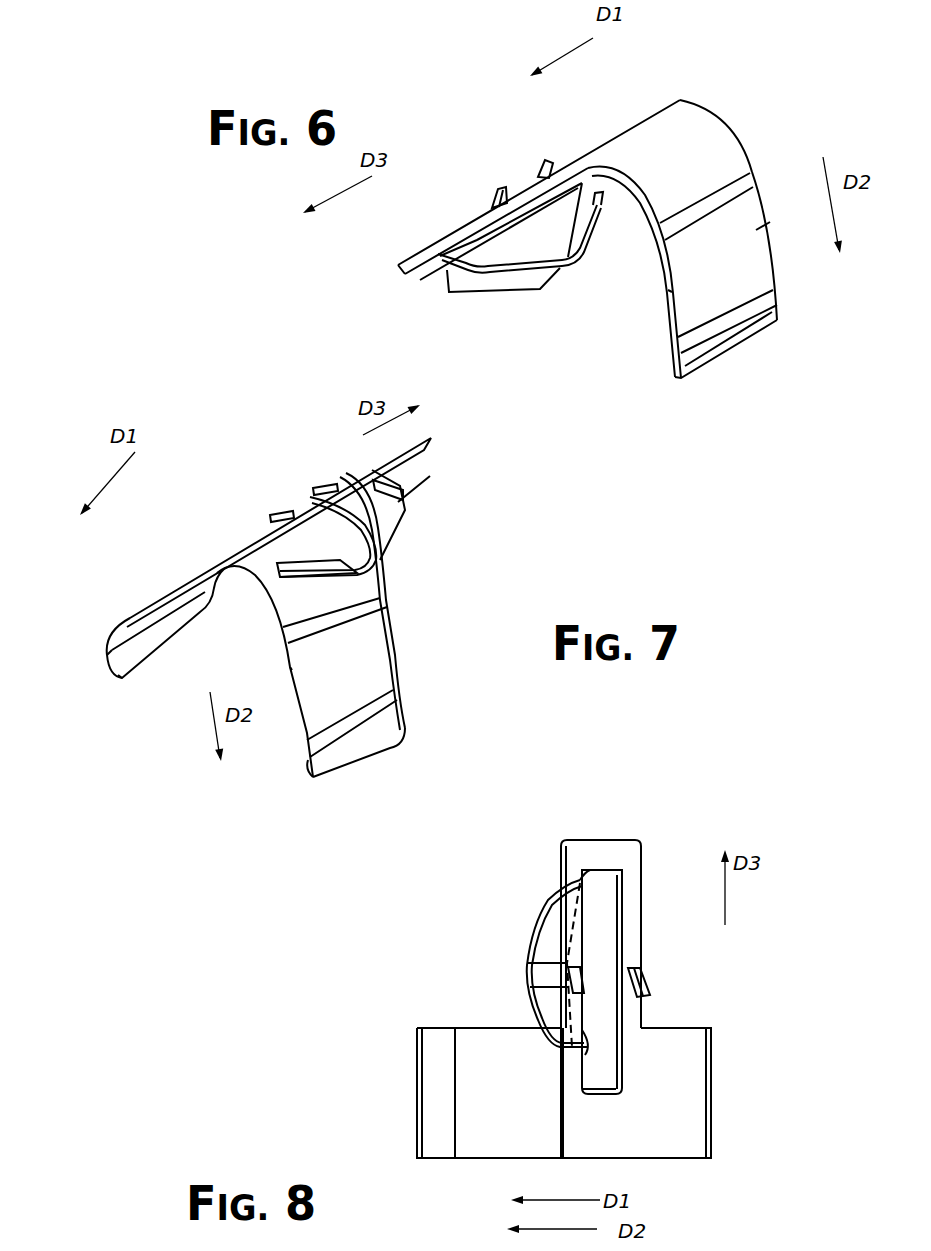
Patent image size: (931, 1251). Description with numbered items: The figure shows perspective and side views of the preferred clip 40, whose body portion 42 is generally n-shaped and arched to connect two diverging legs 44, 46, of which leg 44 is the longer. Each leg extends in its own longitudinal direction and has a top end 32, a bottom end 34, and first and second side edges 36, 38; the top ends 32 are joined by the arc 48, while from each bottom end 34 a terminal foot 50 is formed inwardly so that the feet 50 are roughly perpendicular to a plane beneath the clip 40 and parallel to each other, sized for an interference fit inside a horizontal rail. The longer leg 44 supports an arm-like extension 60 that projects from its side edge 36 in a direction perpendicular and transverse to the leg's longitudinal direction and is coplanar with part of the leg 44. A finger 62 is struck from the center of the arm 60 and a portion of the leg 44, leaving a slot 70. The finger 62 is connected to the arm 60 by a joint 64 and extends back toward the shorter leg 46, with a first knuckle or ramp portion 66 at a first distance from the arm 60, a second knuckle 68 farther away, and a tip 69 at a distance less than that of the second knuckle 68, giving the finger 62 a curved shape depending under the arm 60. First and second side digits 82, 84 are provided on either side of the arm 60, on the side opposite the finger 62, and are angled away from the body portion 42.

In FIG. 6, the top end 32 is at (764, 226).
In FIG. 6, the bottom end 34 is at (778, 309).
In FIG. 7, the bottom end 34 is at (128, 620).
In FIG. 6, the first side edge 36 is at (662, 286).
In FIG. 7, the first side edge 36 is at (237, 552).
In FIG. 8, the first side edge 36 is at (440, 1027).
In FIG. 6, the second side edge 38 is at (763, 227).
In FIG. 7, the second side edge 38 is at (290, 667).
In FIG. 8, the second side edge 38 is at (497, 1160).
In FIG. 6, the clip 40 is at (633, 103).
In FIG. 7, the clip 40 is at (216, 543).
In FIG. 8, the clip 40 is at (400, 1012).
In FIG. 6, the body portion 42 is at (658, 333).
In FIG. 7, the body portion 42 is at (281, 714).
In FIG. 8, the body portion 42 is at (398, 1105).
In FIG. 6, the leg 44 is at (480, 218).
In FIG. 7, the leg 44 is at (160, 602).
In FIG. 8, the leg 44 is at (601, 999).
In FIG. 6, the leg 46 is at (757, 272).
In FIG. 7, the leg 46 is at (377, 660).
In FIG. 8, the leg 46 is at (477, 1150).
In FIG. 6, the arc 48 is at (707, 127).
In FIG. 6, the terminal foot 50 is at (687, 382).
In FIG. 7, the terminal foot 50 is at (143, 670).
In FIG. 6, the arm 60 is at (395, 240).
In FIG. 7, the arm 60 is at (353, 468).
In FIG. 8, the arm 60 is at (670, 987).
In FIG. 6, the finger 62 is at (437, 301).
In FIG. 7, the finger 62 is at (462, 557).
In FIG. 8, the finger 62 is at (538, 873).
In FIG. 6, the joint 64 is at (427, 262).
In FIG. 7, the joint 64 is at (400, 487).
In FIG. 8, the joint 64 is at (613, 863).
In FIG. 6, the first knuckle 66 is at (477, 283).
In FIG. 7, the first knuckle 66 is at (407, 507).
In FIG. 8, the first knuckle 66 is at (535, 918).
In FIG. 6, the second knuckle 68 is at (550, 275).
In FIG. 7, the second knuckle 68 is at (367, 571).
In FIG. 8, the second knuckle 68 is at (523, 966).
In FIG. 6, the tip 69 is at (609, 195).
In FIG. 7, the tip 69 is at (258, 580).
In FIG. 8, the tip 69 is at (587, 1057).
In FIG. 6, the slot 70 is at (523, 213).
In FIG. 8, the slot 70 is at (605, 958).
In FIG. 6, the first side digit 82 is at (492, 196).
In FIG. 7, the first side digit 82 is at (272, 516).
In FIG. 8, the first side digit 82 is at (650, 994).
In FIG. 6, the second side digit 84 is at (543, 165).
In FIG. 7, the second side digit 84 is at (318, 488).
In FIG. 8, the second side digit 84 is at (532, 988).